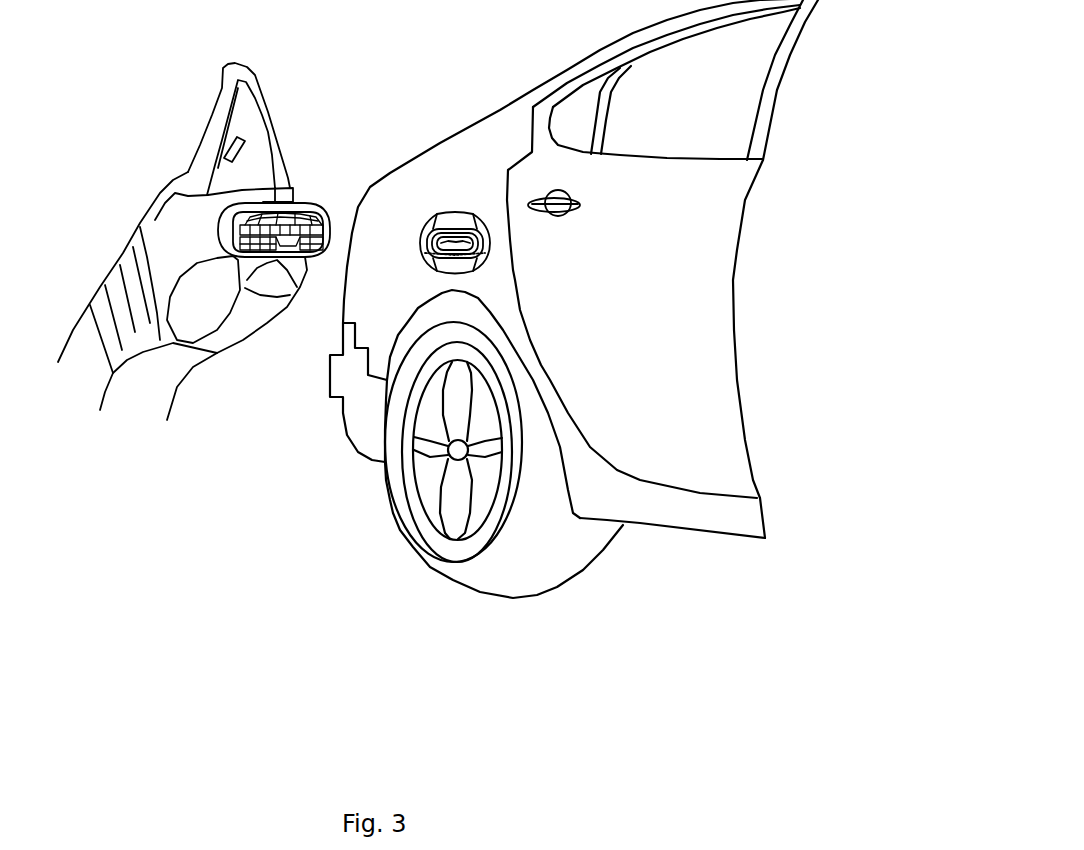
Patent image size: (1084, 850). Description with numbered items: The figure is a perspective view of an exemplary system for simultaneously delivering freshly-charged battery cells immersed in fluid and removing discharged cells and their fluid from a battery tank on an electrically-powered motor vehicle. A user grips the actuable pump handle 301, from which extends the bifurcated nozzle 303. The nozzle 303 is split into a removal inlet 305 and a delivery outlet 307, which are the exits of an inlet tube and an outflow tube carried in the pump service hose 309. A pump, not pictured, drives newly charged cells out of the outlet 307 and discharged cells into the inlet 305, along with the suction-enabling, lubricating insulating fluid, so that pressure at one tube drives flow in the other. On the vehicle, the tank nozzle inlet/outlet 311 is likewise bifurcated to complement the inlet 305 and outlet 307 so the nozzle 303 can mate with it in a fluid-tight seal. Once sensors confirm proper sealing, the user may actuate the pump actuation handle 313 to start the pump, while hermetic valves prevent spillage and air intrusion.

The actuable pump handle 301 is at (212, 51).
The bifurcated nozzle 303 is at (313, 198).
The removal inlet 305 is at (234, 241).
The delivery outlet 307 is at (240, 210).
The pump service hose 309 is at (75, 352).
The tank nozzle inlet/outlet 311 is at (448, 216).
The pump actuation handle 313 is at (240, 145).